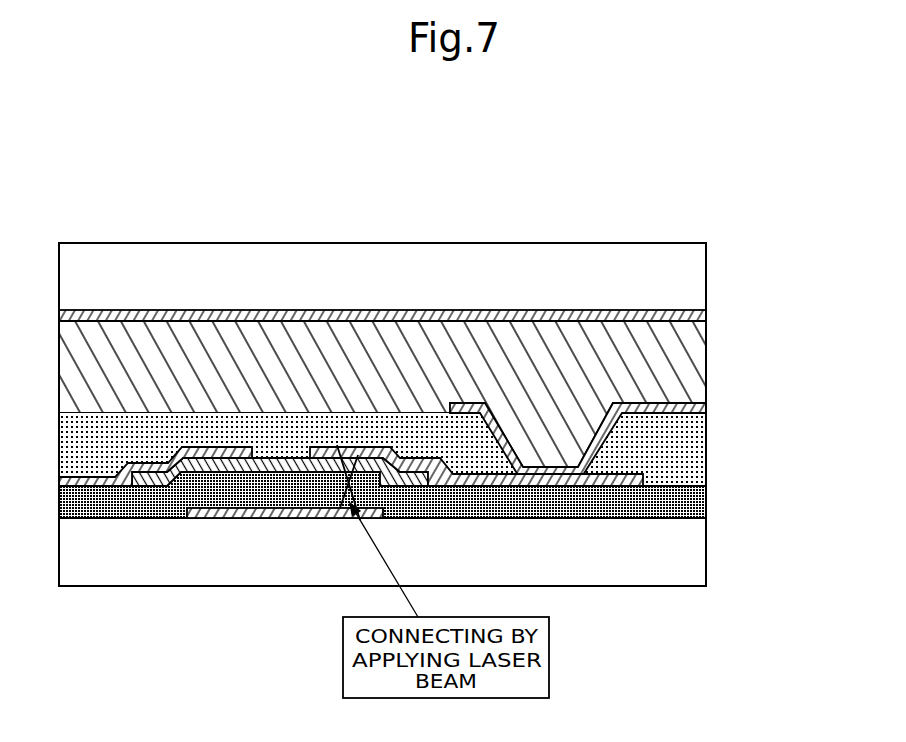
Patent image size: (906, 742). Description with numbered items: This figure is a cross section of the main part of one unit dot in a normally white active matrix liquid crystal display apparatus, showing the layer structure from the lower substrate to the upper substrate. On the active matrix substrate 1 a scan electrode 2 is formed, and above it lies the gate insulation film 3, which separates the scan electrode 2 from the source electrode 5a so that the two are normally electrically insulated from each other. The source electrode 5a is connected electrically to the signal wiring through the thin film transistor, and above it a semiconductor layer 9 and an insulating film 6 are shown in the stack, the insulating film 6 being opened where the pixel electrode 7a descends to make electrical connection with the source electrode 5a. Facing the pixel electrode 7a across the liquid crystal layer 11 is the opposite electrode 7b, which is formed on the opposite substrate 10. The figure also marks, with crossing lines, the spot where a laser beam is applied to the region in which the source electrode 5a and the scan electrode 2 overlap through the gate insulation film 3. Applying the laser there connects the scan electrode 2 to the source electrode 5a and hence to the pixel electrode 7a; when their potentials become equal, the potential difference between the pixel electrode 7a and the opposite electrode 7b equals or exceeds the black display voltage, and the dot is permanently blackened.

The active matrix substrate 1 is at (602, 578).
The scan electrode 2 is at (200, 522).
The gate insulation film 3 is at (697, 497).
The source electrode 5a is at (323, 436).
The interlayer insulating film 6 is at (697, 452).
The pixel electrode 7a is at (700, 404).
The opposite electrode 7b is at (700, 312).
The semiconductor layer 9 is at (281, 481).
The opposite substrate 10 is at (626, 257).
The liquid crystal layer 11 is at (695, 354).